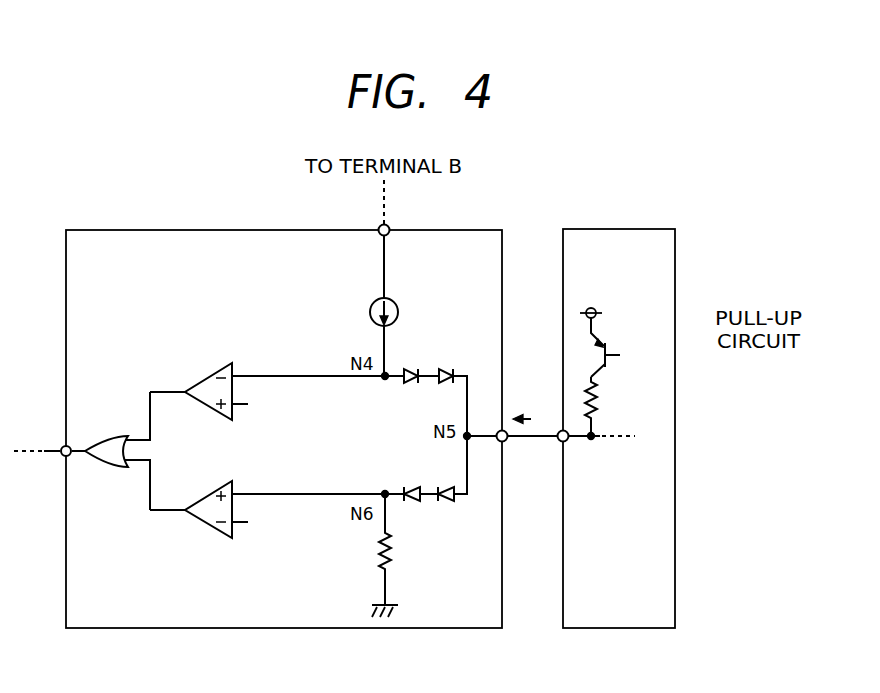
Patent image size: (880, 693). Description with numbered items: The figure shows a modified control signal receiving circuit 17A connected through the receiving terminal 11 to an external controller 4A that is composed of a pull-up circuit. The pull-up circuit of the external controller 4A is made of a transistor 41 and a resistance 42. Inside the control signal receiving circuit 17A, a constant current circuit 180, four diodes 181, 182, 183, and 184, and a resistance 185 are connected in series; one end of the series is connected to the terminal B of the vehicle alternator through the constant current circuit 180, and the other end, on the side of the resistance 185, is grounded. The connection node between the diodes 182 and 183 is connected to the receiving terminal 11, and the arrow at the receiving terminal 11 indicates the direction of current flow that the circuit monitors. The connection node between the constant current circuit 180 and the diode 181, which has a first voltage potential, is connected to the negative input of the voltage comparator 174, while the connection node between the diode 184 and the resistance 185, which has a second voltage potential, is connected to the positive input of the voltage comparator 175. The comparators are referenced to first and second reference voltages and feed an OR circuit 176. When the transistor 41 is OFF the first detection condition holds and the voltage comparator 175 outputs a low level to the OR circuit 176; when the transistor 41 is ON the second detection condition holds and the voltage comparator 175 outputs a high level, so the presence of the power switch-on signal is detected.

The control signal receiving circuit 17A is at (463, 230).
The external controller 4A is at (640, 229).
The receiving terminal 11 is at (503, 443).
The voltage comparator 174 is at (212, 372).
The voltage comparator 175 is at (212, 490).
The OR circuit 176 is at (115, 433).
The constant current circuit 180 is at (396, 303).
The diode 181 is at (412, 368).
The diode 182 is at (446, 368).
The diode 183 is at (446, 486).
The diode 184 is at (408, 486).
The resistance 185 is at (393, 540).
The transistor 41 is at (604, 346).
The resistance 42 is at (600, 394).